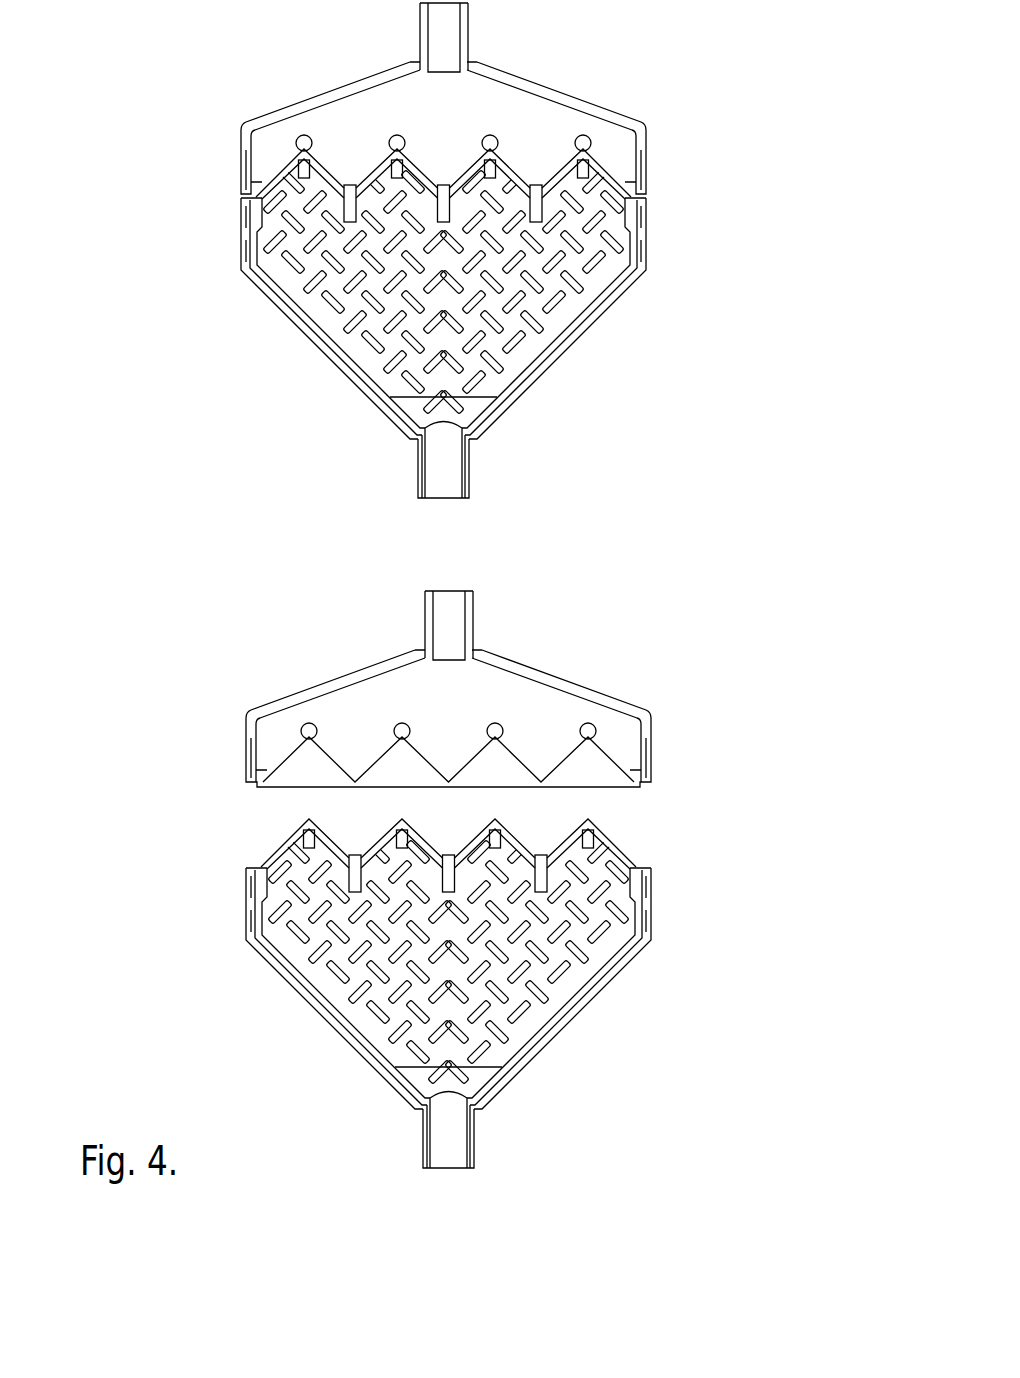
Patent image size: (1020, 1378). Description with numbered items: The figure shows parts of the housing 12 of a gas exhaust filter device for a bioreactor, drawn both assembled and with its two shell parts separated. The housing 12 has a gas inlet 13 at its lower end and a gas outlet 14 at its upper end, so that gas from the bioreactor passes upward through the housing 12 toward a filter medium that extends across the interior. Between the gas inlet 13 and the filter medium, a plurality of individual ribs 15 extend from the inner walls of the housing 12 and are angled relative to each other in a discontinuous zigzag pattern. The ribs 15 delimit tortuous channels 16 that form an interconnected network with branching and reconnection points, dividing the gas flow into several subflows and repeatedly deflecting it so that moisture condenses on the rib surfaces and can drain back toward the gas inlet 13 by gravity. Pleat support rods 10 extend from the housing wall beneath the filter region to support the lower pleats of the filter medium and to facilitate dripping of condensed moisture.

The pleat support rod 10 is at (535, 192).
The housing 12 is at (711, 201).
The gas inlet 13 is at (425, 465).
The gas outlet 14 is at (426, 4).
The ribs 15 is at (347, 333).
The channels 16 is at (605, 247).